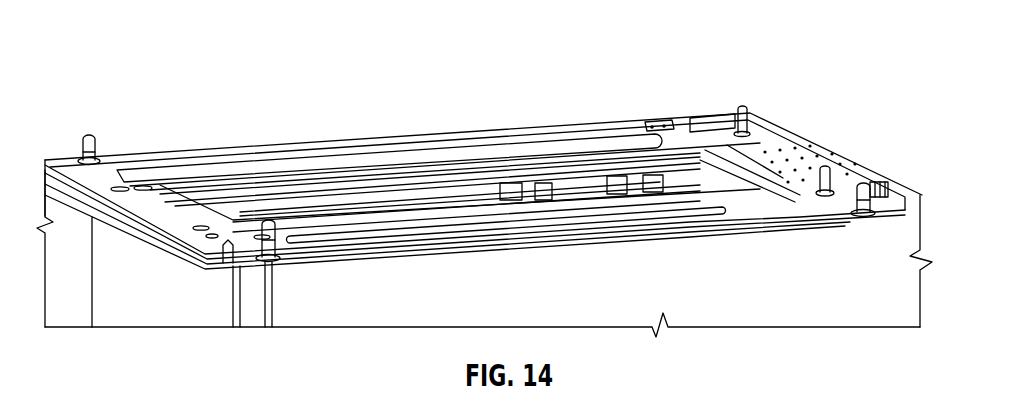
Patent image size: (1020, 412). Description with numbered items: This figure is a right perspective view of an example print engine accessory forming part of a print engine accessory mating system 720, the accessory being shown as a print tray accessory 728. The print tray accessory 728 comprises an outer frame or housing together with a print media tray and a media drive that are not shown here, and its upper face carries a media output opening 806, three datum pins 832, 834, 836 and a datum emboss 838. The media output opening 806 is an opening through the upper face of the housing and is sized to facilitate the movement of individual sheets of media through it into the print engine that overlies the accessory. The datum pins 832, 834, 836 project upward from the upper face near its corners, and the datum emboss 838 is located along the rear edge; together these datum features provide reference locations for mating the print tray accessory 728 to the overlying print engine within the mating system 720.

The print engine accessory mating system 720 is at (112, 92).
The print tray accessory 728 is at (43, 213).
The media output opening 806 is at (407, 180).
The datum pin 832 is at (288, 246).
The datum pin 834 is at (876, 203).
The datum pin 836 is at (97, 158).
The datum emboss 838 is at (661, 121).